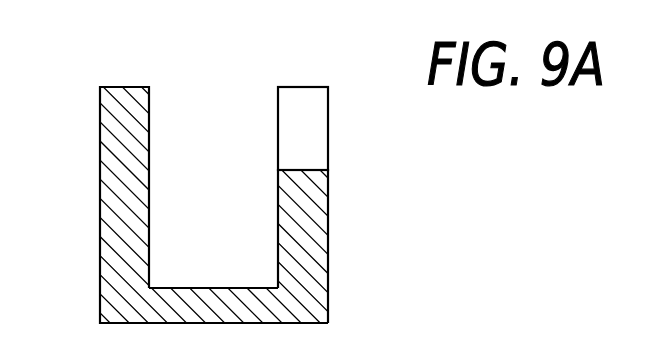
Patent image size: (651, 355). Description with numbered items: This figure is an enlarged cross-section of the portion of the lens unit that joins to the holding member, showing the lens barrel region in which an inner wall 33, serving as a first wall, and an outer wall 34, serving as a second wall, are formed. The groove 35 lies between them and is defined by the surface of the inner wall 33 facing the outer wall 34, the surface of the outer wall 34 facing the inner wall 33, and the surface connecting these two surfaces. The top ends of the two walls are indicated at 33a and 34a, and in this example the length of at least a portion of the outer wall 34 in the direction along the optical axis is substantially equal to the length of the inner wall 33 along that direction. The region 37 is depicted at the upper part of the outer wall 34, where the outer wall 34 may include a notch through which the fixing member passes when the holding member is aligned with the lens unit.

The inner wall 33 is at (117, 207).
The top surface of first wall portion 33a is at (122, 87).
The outer wall 34 is at (313, 242).
The top surface of second wall portion 34a is at (299, 87).
The groove 35 is at (213, 288).
The notch 37 is at (300, 133).